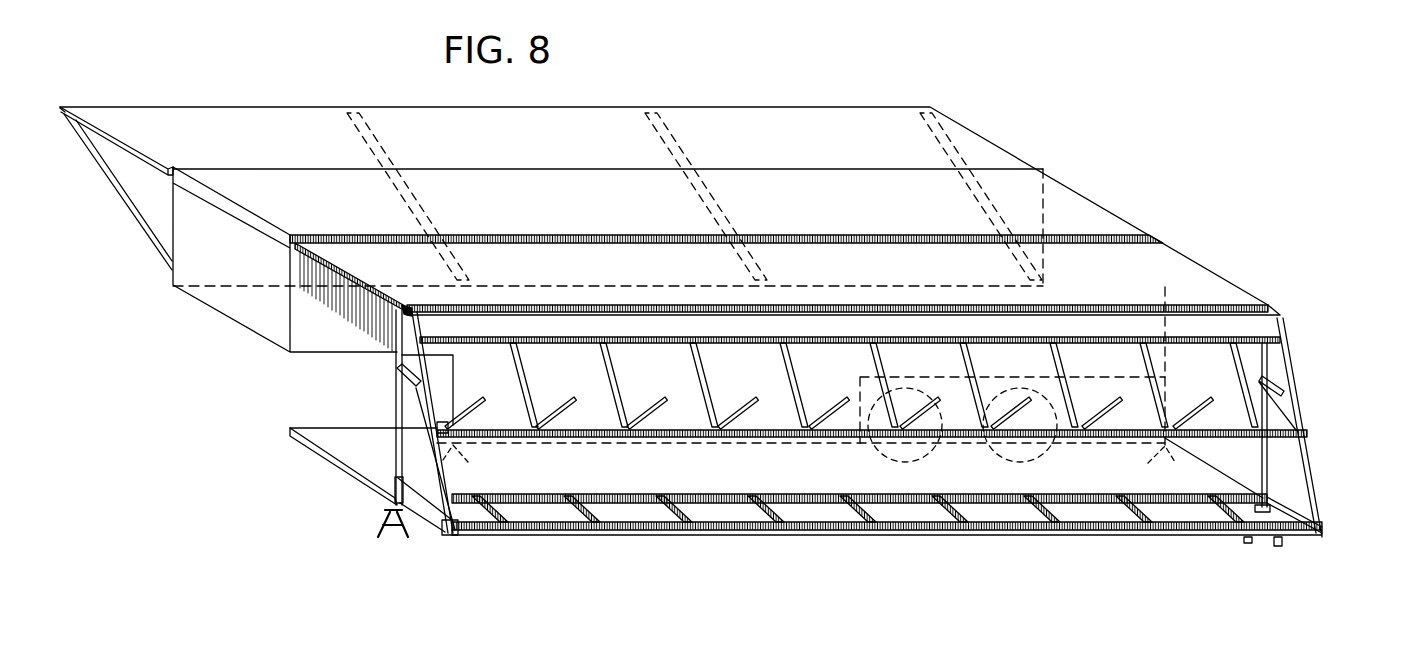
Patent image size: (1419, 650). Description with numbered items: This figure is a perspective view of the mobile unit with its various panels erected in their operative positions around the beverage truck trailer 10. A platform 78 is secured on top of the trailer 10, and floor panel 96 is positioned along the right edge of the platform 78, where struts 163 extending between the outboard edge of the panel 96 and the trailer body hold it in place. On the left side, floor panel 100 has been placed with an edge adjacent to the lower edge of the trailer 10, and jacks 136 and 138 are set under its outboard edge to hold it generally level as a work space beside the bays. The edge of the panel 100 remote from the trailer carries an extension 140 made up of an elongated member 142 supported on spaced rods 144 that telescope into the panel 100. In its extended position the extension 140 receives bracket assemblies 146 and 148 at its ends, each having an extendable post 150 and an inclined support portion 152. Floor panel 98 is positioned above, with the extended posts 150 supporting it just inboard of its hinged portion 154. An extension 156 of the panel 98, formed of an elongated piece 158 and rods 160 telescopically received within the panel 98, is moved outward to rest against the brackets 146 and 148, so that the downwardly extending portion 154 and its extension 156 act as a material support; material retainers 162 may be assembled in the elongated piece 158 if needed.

The beverage truck trailer 10 is at (233, 323).
The platform 78 is at (237, 210).
The floor panel 96 is at (190, 116).
The floor panel 98 is at (370, 267).
The floor panel 100 is at (327, 460).
The jack 136 is at (380, 528).
The jack 138 is at (1283, 545).
The extension 140 is at (860, 535).
The elongated member 142 is at (988, 530).
The rod 144 is at (480, 495).
The bracket assembly 146 is at (388, 423).
The bracket assembly 148 is at (1317, 490).
The extendable post 150 is at (397, 340).
The inclined support portion 152 is at (400, 373).
The hinged portion 154 is at (553, 307).
The extension 156 is at (742, 440).
The elongated piece 158 is at (952, 440).
The rod 160 is at (515, 378).
The material retainer 162 is at (652, 376).
The strut 163 is at (127, 207).